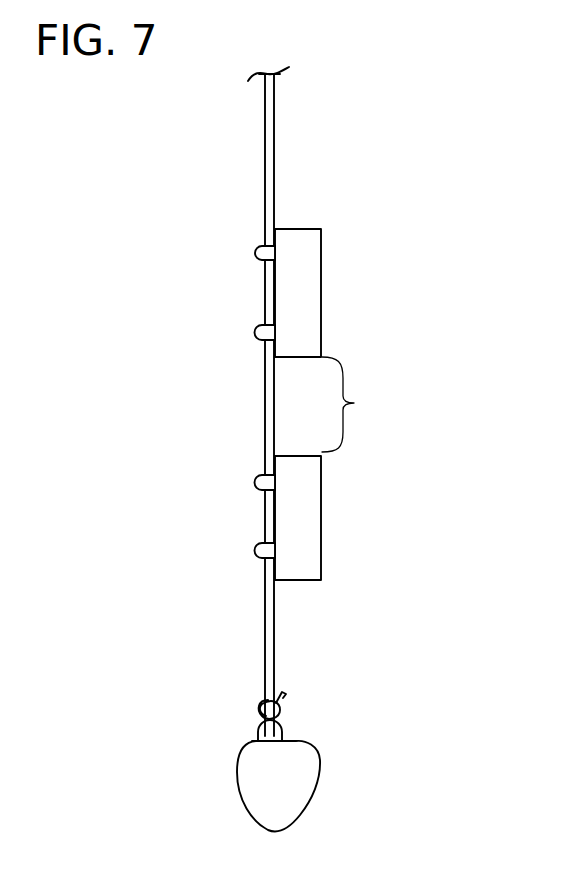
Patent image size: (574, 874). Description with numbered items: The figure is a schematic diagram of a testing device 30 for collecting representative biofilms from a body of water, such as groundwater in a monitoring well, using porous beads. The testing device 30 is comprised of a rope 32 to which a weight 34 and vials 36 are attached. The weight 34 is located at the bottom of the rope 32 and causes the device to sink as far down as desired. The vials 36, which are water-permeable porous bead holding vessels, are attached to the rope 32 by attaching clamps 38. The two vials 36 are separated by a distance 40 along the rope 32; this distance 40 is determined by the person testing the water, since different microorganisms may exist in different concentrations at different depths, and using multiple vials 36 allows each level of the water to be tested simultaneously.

The testing device 30 is at (404, 160).
The rope 32 is at (262, 142).
The weight 34 is at (248, 772).
The vials 36 is at (300, 280).
The attaching clamps 38 is at (255, 252).
The distance 40 is at (359, 404).